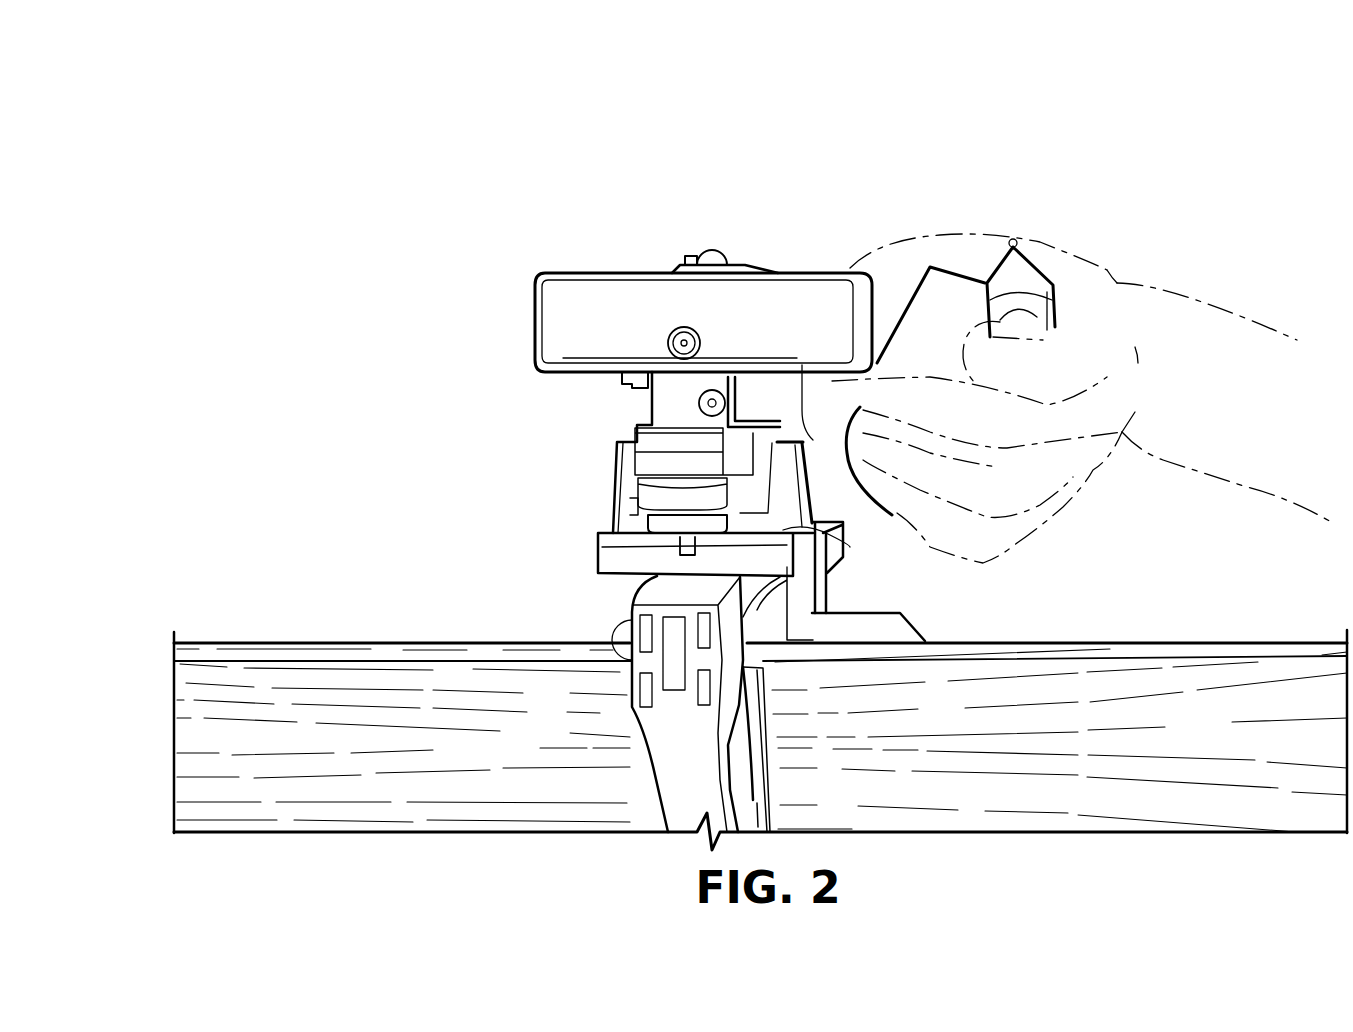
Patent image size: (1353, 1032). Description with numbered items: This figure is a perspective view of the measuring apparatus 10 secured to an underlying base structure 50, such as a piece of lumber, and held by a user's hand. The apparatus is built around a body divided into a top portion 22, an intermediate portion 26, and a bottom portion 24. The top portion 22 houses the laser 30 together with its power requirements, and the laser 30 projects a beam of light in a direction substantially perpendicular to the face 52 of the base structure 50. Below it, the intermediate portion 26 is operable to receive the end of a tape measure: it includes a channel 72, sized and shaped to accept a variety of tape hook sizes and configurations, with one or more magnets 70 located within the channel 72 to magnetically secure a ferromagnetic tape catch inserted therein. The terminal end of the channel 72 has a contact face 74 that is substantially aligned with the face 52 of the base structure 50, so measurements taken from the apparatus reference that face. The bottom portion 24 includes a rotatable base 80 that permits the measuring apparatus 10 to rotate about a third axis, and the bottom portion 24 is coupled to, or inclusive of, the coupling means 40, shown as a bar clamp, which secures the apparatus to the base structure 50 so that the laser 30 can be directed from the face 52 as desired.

The measuring apparatus 10 is at (533, 170).
The top portion 22 is at (815, 320).
The bottom portion 24 is at (747, 402).
The intermediate portion 26 is at (892, 515).
The laser 30 is at (680, 333).
The coupling means 40 is at (632, 716).
The base structure 50 is at (348, 652).
The face 52 is at (1207, 745).
The magnet 70 is at (713, 413).
The channel 72 is at (666, 391).
The contact face 74 is at (712, 391).
The rotatable base 80 is at (610, 558).